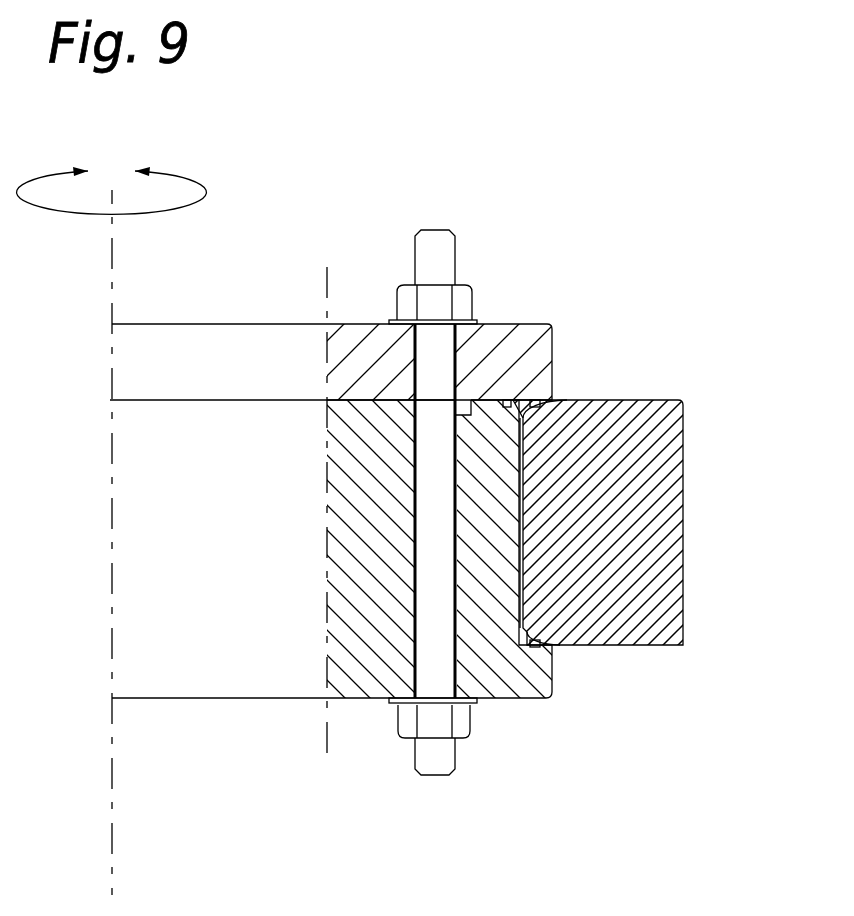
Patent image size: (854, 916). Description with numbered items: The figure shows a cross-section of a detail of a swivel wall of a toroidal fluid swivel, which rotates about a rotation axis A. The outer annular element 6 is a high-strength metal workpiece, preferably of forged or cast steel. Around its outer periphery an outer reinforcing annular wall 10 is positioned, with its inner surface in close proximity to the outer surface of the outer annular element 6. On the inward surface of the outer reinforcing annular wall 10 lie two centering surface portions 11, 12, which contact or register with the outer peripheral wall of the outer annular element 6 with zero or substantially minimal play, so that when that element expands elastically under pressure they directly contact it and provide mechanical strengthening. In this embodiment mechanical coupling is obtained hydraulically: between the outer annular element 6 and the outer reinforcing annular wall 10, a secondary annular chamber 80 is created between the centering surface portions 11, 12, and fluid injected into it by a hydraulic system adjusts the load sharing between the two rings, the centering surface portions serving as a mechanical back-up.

The outer annular element 6 is at (367, 668).
The outer reinforcing annular wall 10 is at (657, 562).
The centering surface portion 11 is at (571, 398).
The centering surface portion 12 is at (558, 650).
The secondary annular chamber 80 is at (523, 513).
The rotation axis A is at (112, 262).